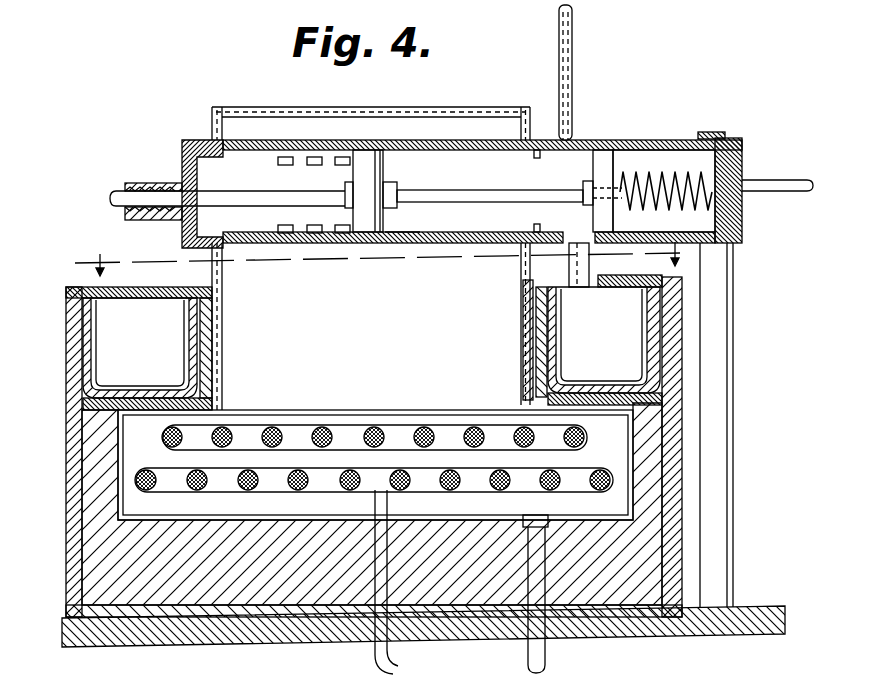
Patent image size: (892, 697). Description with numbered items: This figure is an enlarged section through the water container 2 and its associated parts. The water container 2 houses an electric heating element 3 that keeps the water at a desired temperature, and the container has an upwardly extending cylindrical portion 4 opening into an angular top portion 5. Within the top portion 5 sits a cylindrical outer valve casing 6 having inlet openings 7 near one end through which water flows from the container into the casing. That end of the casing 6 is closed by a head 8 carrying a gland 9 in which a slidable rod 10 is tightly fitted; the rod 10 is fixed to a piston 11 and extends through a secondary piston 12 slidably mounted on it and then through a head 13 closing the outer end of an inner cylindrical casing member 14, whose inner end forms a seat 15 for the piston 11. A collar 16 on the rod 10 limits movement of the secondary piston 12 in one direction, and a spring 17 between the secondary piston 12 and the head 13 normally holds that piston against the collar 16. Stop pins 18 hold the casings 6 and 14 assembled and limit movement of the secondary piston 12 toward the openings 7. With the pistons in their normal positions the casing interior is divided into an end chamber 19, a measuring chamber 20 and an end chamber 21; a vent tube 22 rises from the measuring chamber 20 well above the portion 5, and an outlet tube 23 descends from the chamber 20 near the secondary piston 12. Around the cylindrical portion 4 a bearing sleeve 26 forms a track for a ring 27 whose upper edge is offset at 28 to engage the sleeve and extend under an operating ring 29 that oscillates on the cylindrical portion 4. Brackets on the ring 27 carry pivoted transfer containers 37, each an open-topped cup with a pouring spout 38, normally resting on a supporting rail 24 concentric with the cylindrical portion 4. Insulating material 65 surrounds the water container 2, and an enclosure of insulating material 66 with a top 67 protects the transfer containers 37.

The water container 2 is at (623, 433).
The electric heating element 3 is at (598, 485).
The cylindrical portion 4 is at (519, 293).
The angular top portion 5 is at (528, 122).
The outer valve casing 6 is at (380, 245).
The inlet openings 7 is at (312, 250).
The head 8 is at (184, 234).
The gland 9 is at (157, 184).
The slidable rod 10 is at (240, 192).
The piston 11 is at (366, 155).
The secondary piston 12 is at (610, 152).
The head 13 is at (740, 157).
The inner cylindrical casing member 14 is at (424, 152).
The seat 15 is at (398, 236).
The collar 16 is at (585, 181).
The spring 17 is at (665, 173).
The stop pins 18 is at (533, 152).
The end chamber 19 is at (314, 195).
The measuring chamber 20 is at (401, 186).
The end chamber 21 is at (664, 191).
The vent tube 22 is at (572, 62).
The outlet tube 23 is at (589, 263).
The supporting rail 24 is at (156, 402).
The bearing sleeve 26 is at (528, 342).
The ring 27 is at (527, 330).
The offset 28 is at (222, 315).
The operating ring 29 is at (222, 282).
The transfer container 37 is at (97, 373).
The pouring spout 38 is at (93, 305).
The insulating material 65 is at (171, 597).
The enclosure of insulating material 66 is at (677, 318).
The top 67 is at (627, 282).